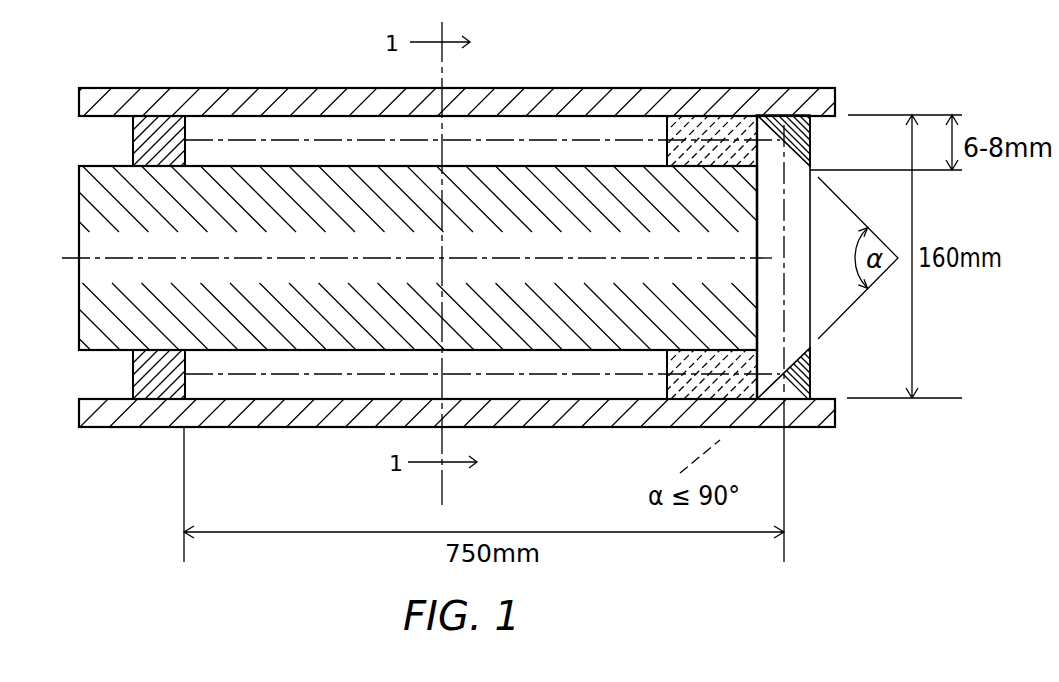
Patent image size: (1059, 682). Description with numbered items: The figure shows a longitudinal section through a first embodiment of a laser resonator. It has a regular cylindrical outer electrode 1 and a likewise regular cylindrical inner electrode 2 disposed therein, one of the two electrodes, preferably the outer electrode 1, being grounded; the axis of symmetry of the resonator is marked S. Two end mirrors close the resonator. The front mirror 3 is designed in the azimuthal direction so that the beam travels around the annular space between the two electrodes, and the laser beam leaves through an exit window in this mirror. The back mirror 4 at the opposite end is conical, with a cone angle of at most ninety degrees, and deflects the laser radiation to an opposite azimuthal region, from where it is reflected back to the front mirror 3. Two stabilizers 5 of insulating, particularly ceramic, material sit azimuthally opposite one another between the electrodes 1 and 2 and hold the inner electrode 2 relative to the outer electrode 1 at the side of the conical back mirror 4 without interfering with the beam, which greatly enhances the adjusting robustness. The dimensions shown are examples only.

The outer electrode 1 is at (292, 96).
The inner electrode 2 is at (102, 318).
The end mirror (front mirror) 3 is at (143, 374).
The end mirror (back mirror) 4 is at (776, 400).
The stabilizer 5 is at (729, 128).